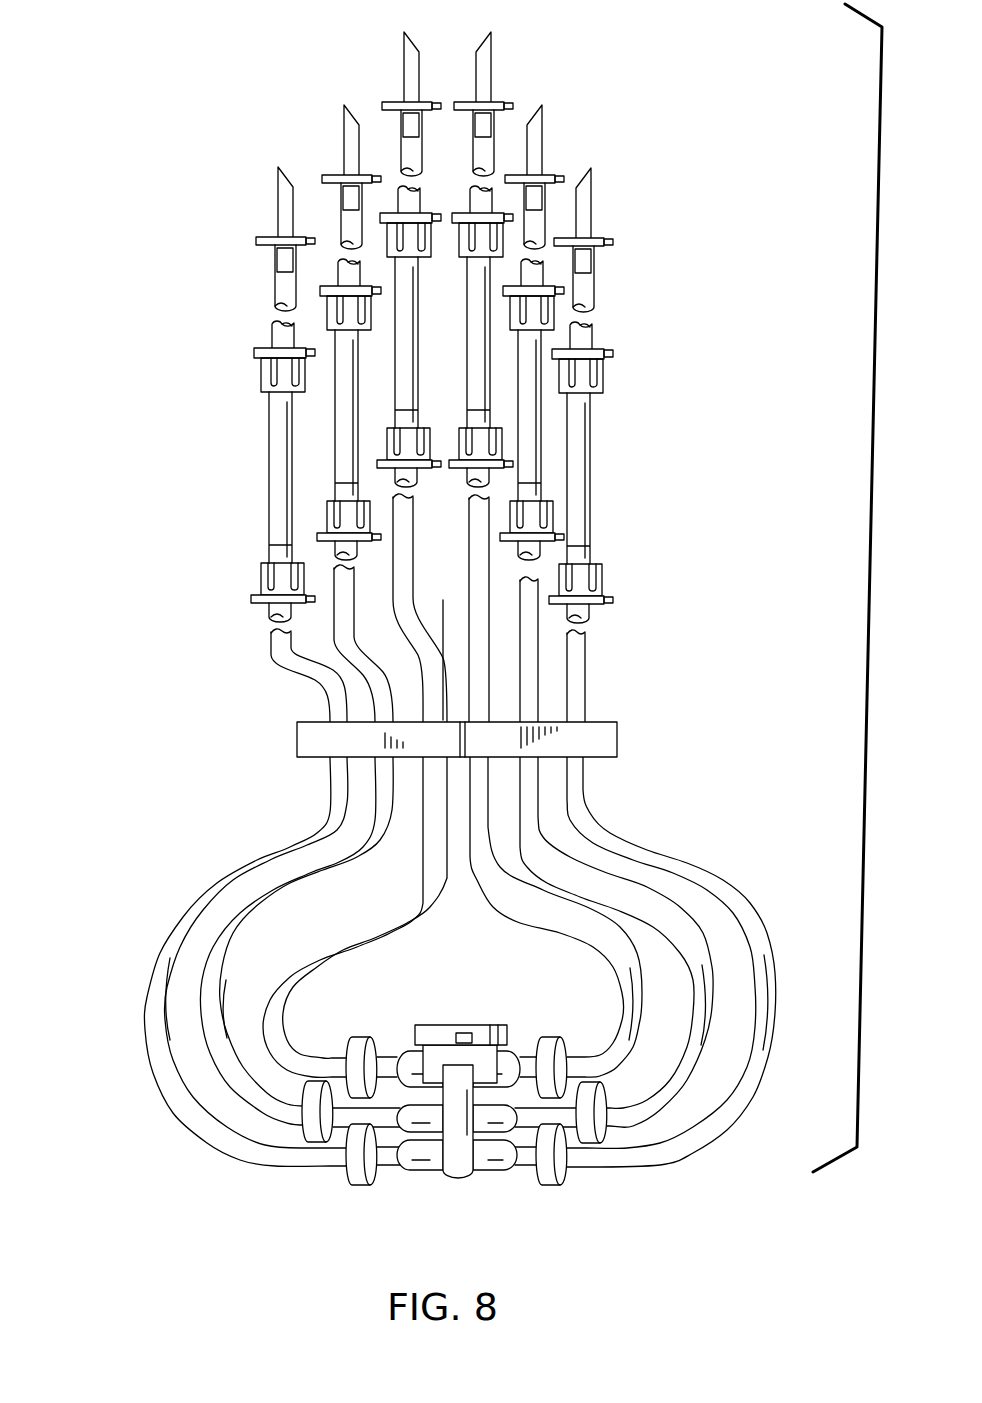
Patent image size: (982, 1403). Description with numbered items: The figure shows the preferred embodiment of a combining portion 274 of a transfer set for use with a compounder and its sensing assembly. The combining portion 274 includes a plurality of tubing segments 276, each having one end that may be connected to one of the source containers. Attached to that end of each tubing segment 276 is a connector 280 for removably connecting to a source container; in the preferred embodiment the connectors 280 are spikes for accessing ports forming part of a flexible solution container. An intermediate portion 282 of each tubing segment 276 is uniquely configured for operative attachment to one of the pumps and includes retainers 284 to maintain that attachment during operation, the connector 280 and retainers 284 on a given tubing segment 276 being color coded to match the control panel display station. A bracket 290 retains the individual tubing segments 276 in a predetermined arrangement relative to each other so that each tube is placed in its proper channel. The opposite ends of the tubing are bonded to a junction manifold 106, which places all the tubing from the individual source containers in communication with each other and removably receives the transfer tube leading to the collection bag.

The junction manifold 106 is at (470, 1177).
The combining portion 274 is at (436, 830).
The tubing segments 276 is at (308, 673).
The connectors 280 is at (593, 205).
The intermediate portion 282 is at (627, 600).
The retainers 284 is at (615, 313).
The bracket 290 is at (603, 739).